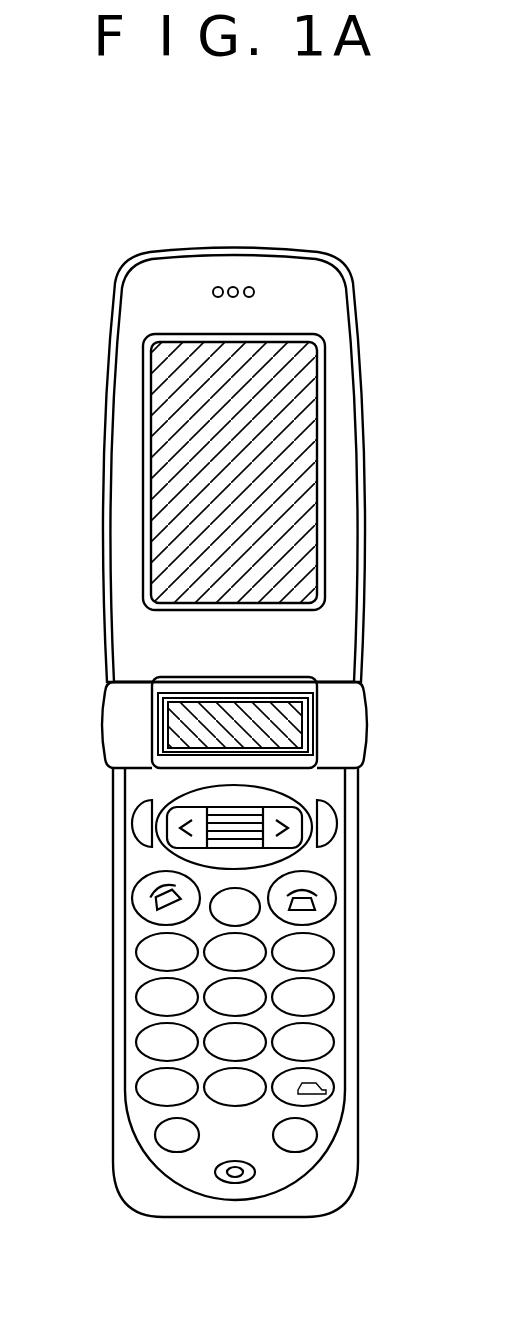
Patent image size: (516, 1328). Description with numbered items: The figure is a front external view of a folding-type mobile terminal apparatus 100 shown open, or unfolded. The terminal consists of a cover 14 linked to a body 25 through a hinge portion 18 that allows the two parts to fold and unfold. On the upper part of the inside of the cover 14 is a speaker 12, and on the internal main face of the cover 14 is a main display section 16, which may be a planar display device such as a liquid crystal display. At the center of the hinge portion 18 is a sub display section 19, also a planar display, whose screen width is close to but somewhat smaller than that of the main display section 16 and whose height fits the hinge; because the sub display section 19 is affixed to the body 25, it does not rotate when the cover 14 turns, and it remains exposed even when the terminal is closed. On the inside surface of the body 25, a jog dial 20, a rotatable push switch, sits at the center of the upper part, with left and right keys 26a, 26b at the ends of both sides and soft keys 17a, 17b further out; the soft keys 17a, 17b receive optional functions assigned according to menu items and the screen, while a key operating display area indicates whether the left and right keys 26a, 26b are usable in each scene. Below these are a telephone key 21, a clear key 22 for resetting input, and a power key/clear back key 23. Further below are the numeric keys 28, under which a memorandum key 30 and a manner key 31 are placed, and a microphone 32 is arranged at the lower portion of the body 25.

The mobile terminal apparatus 100 is at (281, 191).
The speaker 12 is at (251, 287).
The cover 14 is at (376, 471).
The main display section 16 is at (165, 481).
The hinge portion 18 is at (105, 710).
The sub display section 19 is at (295, 735).
The jog dial 20 is at (248, 808).
The soft key 17a is at (140, 808).
The soft key 17b is at (327, 833).
The left key 26a is at (172, 843).
The right key 26b is at (290, 840).
The telephone key 21 is at (148, 903).
The clear key 22 is at (248, 915).
The power key/clear back key 23 is at (320, 910).
The body 25 is at (378, 1040).
The numeric keys 28 is at (100, 930).
The memorandum key 30 is at (312, 1130).
The manner key 31 is at (158, 1140).
The microphone 32 is at (250, 1181).